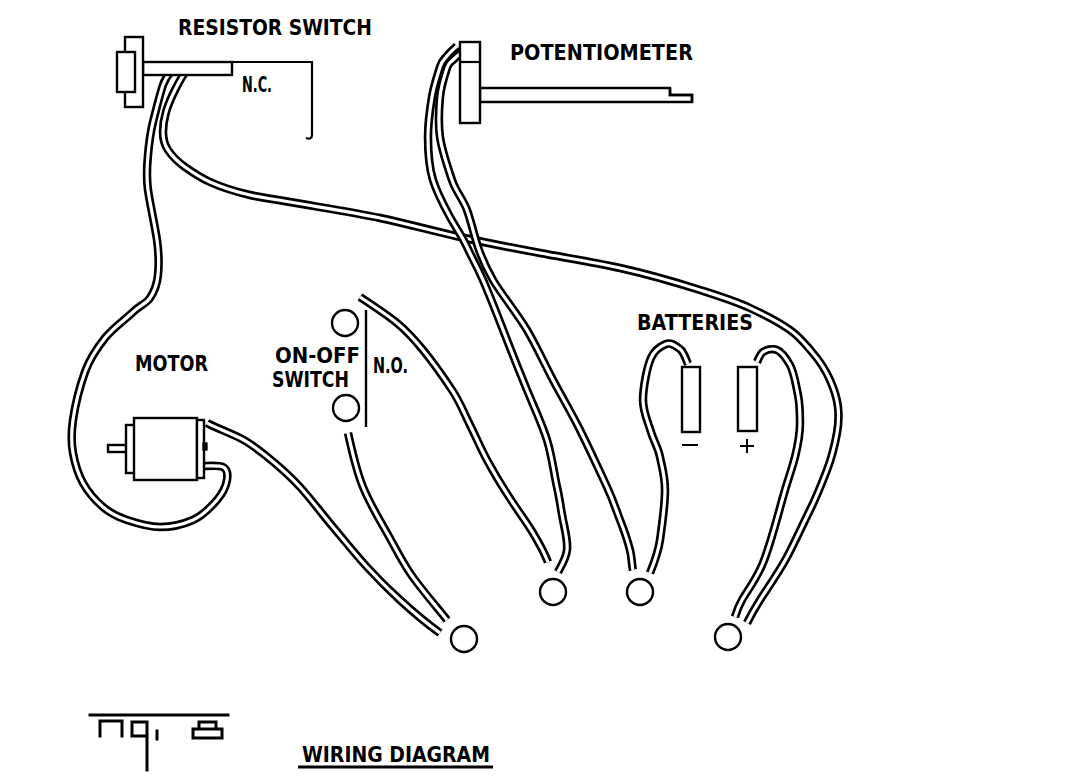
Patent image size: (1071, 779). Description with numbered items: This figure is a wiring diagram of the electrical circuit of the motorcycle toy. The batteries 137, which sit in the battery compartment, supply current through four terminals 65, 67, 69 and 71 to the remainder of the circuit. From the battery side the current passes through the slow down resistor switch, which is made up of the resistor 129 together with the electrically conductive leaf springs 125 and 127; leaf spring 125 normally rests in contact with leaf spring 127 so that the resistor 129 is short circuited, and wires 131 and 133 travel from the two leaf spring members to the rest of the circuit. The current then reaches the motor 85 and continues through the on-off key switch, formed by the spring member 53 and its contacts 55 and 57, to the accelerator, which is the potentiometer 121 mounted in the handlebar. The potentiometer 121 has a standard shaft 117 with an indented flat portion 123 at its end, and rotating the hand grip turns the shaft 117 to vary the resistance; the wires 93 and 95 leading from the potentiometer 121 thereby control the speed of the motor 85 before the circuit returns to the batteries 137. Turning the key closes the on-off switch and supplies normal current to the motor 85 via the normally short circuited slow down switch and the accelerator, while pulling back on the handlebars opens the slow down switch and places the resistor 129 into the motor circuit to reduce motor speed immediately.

The spring member 53 is at (366, 393).
The on-off key switch contact 55 is at (343, 312).
The on-off key switch contact 57 is at (337, 412).
The terminal 65 is at (467, 650).
The terminal 67 is at (555, 600).
The terminal 69 is at (643, 600).
The terminal 71 is at (730, 648).
The motor 85 is at (185, 427).
The wire 93 is at (477, 212).
The wire 95 is at (462, 252).
The shaft 117 is at (617, 103).
The potentiometer 121 is at (472, 123).
The flat portion 123 is at (690, 89).
The leaf spring 125 is at (305, 62).
The leaf spring 127 is at (212, 77).
The resistor 129 is at (117, 72).
The wire 131 is at (158, 285).
The wire 133 is at (317, 203).
The batteries 137 is at (729, 357).